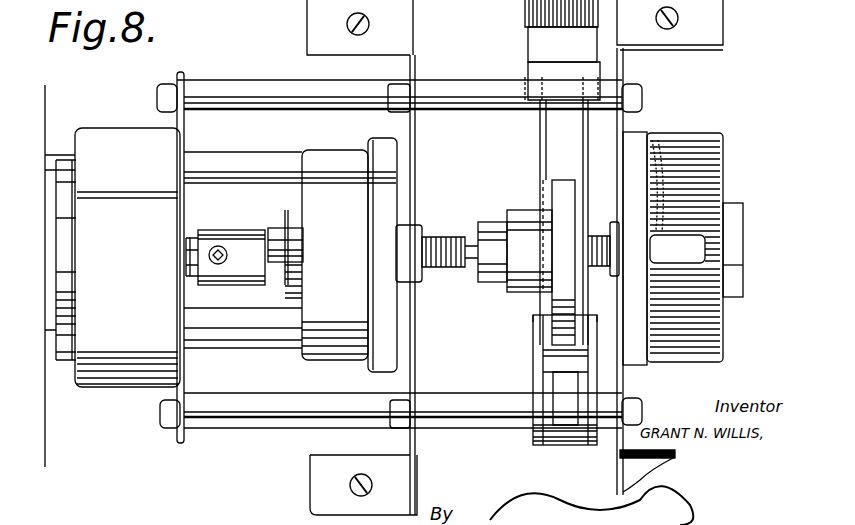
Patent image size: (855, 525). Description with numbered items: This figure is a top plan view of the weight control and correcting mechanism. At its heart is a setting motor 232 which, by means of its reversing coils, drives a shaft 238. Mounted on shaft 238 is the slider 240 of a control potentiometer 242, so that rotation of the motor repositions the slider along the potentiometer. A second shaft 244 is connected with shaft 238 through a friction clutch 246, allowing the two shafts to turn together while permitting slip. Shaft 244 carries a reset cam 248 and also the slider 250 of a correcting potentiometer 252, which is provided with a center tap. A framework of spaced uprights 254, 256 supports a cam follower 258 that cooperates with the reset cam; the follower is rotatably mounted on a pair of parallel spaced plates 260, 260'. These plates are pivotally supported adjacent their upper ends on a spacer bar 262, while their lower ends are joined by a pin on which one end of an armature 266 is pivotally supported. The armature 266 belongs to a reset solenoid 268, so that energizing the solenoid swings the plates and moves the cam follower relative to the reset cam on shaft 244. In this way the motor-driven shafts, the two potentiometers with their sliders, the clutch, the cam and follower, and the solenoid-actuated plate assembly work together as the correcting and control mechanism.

The setting motor 232 is at (118, 121).
The shaft 238 is at (198, 242).
The slider 240 is at (292, 258).
The control potentiometer 242 is at (310, 360).
The shaft 244 is at (587, 263).
The friction clutch 246 is at (517, 212).
The reset cam 248 is at (558, 183).
The slider 250 is at (732, 245).
The correcting potentiometer 252 is at (720, 155).
The upright 254 is at (415, 125).
The upright 256 is at (627, 115).
The cam follower 258 is at (543, 318).
The spaced plate 260 is at (527, 368).
The spaced plate 260' is at (618, 397).
The spacer bar 262 is at (495, 415).
The armature 266 is at (548, 135).
The reset solenoid 268 is at (688, 245).